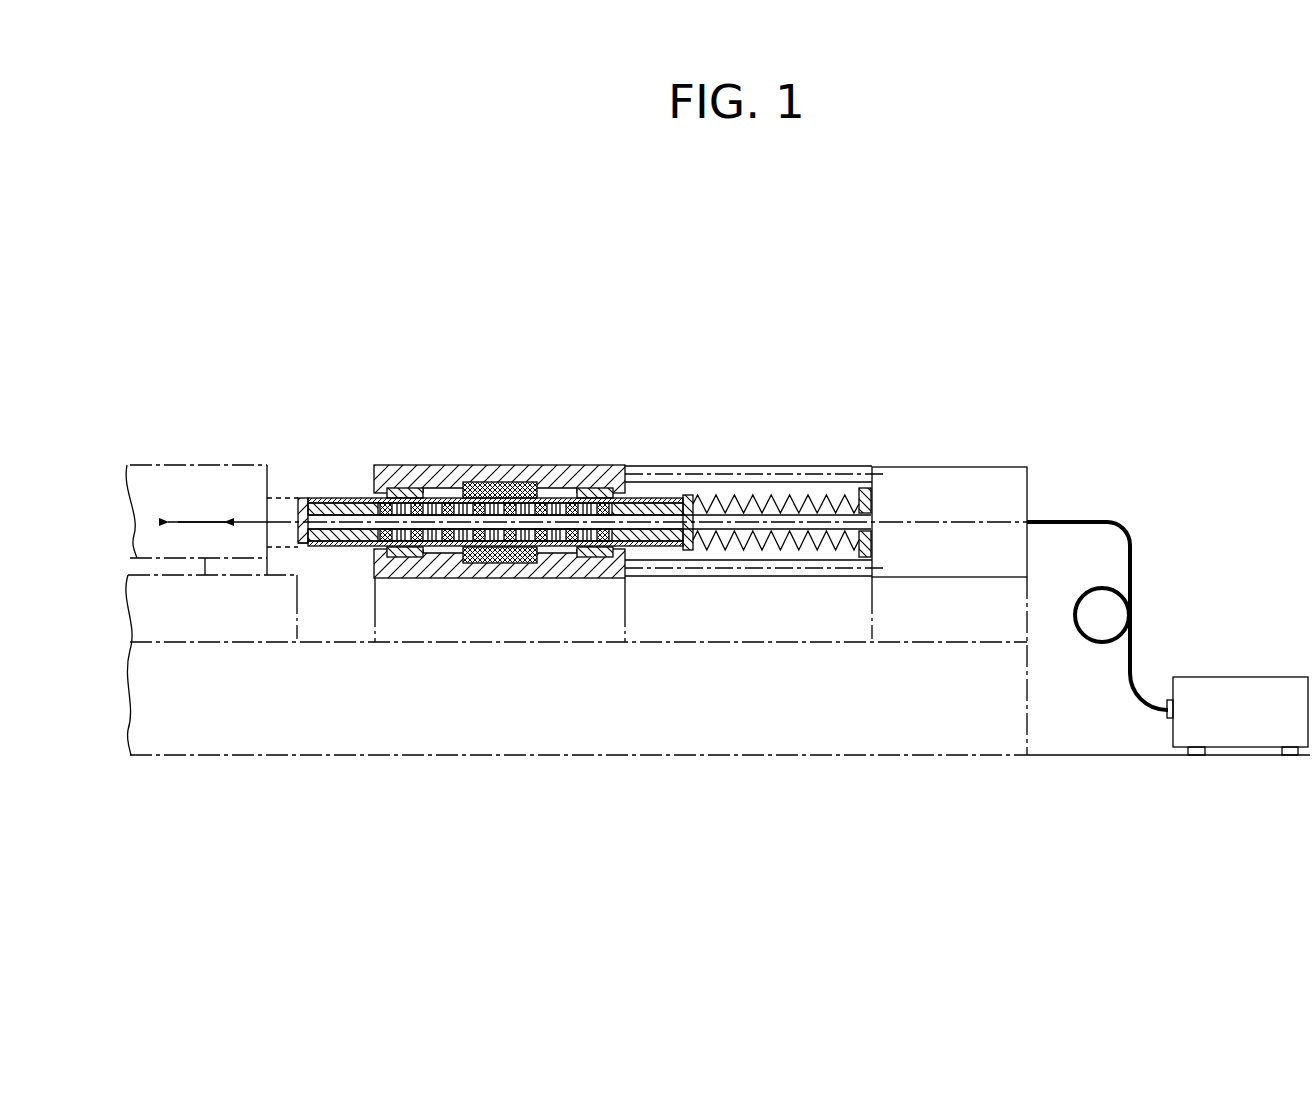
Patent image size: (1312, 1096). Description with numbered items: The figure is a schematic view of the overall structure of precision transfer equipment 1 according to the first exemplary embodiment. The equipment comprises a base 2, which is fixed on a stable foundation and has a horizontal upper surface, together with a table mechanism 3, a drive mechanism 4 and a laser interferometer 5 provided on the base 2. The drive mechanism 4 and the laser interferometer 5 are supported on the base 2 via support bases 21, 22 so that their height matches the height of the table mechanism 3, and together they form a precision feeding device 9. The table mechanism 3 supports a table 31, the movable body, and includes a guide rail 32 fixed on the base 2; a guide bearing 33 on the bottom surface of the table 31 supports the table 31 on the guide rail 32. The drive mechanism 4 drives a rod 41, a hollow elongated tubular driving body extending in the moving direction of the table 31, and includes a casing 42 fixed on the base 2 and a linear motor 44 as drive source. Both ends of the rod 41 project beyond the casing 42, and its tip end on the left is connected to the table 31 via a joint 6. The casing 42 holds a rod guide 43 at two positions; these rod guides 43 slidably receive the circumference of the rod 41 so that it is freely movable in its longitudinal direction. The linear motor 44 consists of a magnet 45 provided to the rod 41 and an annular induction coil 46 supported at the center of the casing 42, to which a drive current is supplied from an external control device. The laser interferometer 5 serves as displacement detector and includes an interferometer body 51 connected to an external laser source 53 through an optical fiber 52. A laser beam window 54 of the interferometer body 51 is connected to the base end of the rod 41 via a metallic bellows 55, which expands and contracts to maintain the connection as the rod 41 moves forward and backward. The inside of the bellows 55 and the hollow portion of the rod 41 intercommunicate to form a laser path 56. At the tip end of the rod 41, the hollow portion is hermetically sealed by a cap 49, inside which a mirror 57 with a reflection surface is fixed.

The precision transfer equipment 1 is at (378, 275).
The base 2 is at (318, 755).
The table mechanism 3 is at (217, 420).
The drive mechanism 4 is at (572, 408).
The laser interferometer 5 is at (955, 405).
The joint 6 is at (294, 497).
The precision feeding device 9 is at (795, 345).
The support base 21 is at (626, 628).
The support base 22 is at (872, 628).
The table 31 is at (168, 466).
The guide rail 32 is at (264, 642).
The guide bearing 33 is at (208, 578).
The rod 41 is at (350, 498).
The casing 42 is at (463, 466).
The rod guide 43 is at (407, 466).
The linear motor 44 is at (543, 622).
The magnet 45 is at (575, 578).
The induction coil 46 is at (494, 578).
The cap 49 is at (308, 546).
The interferometer body 51 is at (1008, 467).
The optical fiber 52 is at (1132, 550).
The laser source 53 is at (1248, 677).
The laser beam window 54 is at (860, 490).
The bellows 55 is at (797, 495).
The laser path 56 is at (740, 550).
The mirror 57 is at (312, 498).